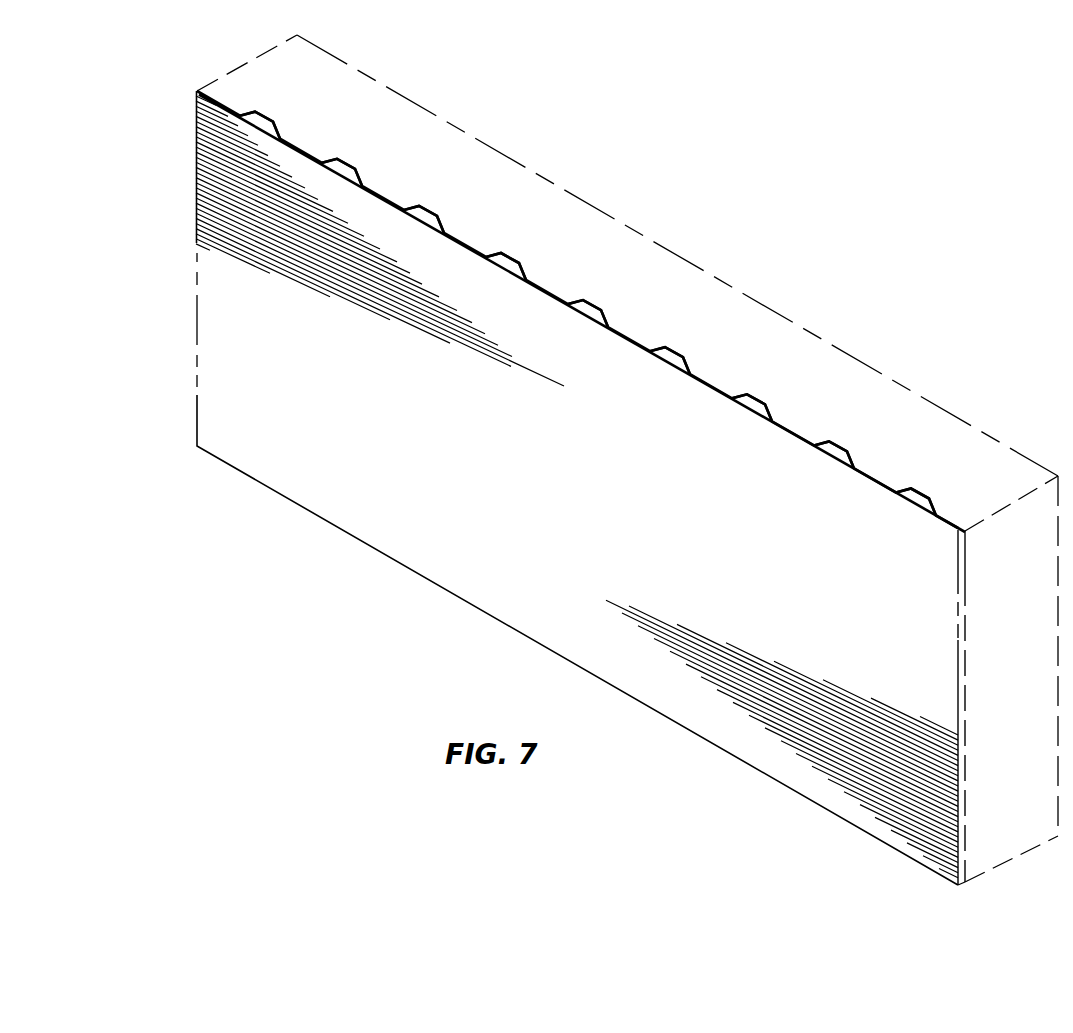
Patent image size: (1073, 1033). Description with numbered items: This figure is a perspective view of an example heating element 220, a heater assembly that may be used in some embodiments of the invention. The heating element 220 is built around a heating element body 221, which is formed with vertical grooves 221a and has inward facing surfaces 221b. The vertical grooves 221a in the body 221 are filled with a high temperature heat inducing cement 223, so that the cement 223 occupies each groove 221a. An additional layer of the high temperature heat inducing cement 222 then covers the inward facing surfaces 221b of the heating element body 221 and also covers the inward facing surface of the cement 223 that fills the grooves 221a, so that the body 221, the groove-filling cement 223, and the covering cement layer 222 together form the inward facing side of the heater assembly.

The heating element 220 is at (790, 124).
The heating element body 221 is at (928, 425).
The vertical grooves 221a is at (684, 344).
The inward facing surfaces 221b is at (861, 480).
The additional layer of high temperature heat inducing cement 222 is at (407, 520).
The high temperature heat inducing cement 223 is at (508, 258).